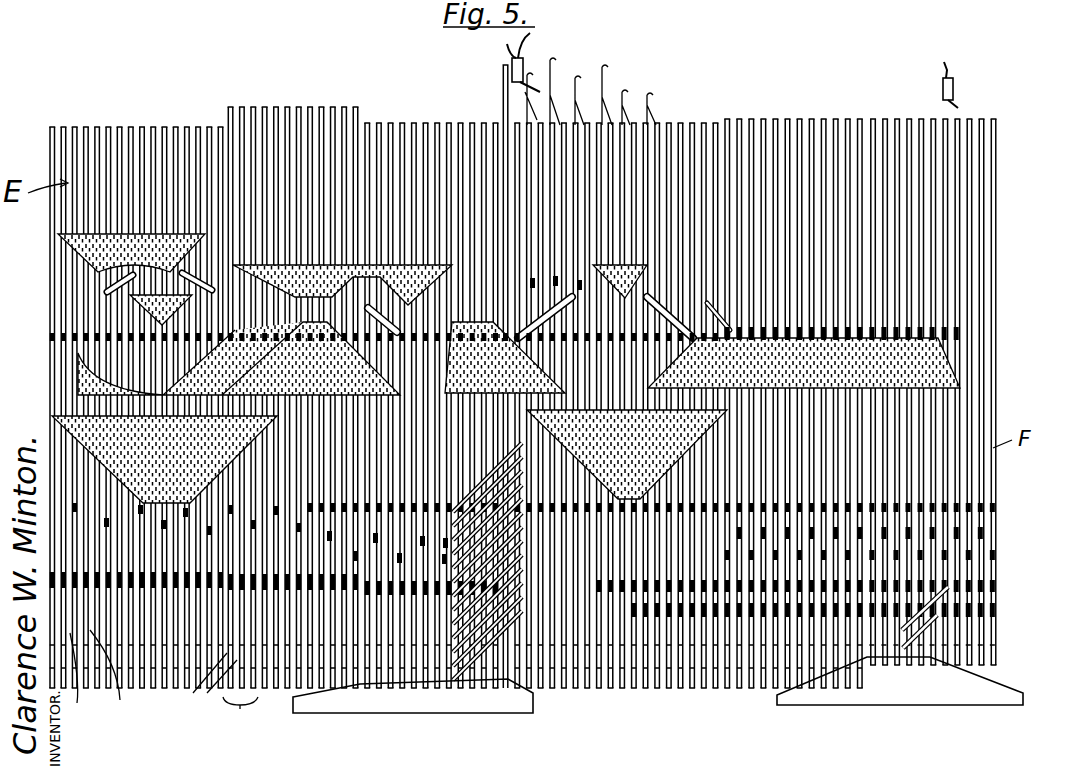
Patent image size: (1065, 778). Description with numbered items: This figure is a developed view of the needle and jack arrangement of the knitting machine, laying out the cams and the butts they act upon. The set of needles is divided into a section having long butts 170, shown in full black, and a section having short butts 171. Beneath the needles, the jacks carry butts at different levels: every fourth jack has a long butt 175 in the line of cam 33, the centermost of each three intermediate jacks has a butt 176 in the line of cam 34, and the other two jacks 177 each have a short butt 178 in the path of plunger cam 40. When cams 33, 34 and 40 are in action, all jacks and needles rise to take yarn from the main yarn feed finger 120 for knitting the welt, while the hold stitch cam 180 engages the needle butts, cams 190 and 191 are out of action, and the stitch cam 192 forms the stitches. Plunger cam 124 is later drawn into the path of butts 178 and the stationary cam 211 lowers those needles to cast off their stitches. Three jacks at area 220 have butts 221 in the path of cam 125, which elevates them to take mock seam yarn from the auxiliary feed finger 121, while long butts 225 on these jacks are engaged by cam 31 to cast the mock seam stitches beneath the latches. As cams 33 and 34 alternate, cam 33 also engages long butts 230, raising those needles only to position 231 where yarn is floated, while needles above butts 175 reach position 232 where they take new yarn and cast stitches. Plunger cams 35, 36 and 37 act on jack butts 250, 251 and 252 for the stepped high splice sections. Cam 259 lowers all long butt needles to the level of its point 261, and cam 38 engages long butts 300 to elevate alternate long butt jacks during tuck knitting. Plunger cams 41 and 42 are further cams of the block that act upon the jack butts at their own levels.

The plunger cam 31 is at (510, 483).
The plunger cam 33 is at (528, 488).
The plunger cam 34 is at (528, 497).
The plunger cam 35 is at (520, 517).
The plunger cam 36 is at (520, 535).
The plunger cam 37 is at (520, 545).
The plunger cam 38 is at (520, 563).
The plunger cam 40 is at (520, 587).
The plunger cam 41 is at (522, 600).
The plunger cam 42 is at (478, 668).
The yarn feed finger 120 is at (511, 60).
The yarn feed finger 121 is at (954, 88).
The plunger cam 124 is at (943, 587).
The plunger cam 125 is at (933, 615).
The long butts 170 is at (947, 328).
The short butts 171 is at (990, 331).
The long butt 175 is at (100, 523).
The butt 176 is at (80, 542).
The jacks 177 is at (89, 677).
The short butt 178 is at (118, 673).
The hold stitch cam 180 is at (370, 322).
The cam 190 is at (574, 300).
The cam 191 is at (505, 357).
The stitch cam 192 is at (660, 295).
The cam 211 is at (153, 303).
The area of three jacks 220 is at (241, 714).
The butts 221 is at (204, 687).
The long butts 225 is at (237, 530).
The long butts 230 is at (77, 507).
The needle position 231 is at (530, 70).
The needle position 232 is at (556, 62).
The jack butts 250 is at (290, 575).
The jack butts 251 is at (357, 585).
The jack butts 252 is at (245, 600).
The cam 259 is at (313, 282).
The cam point 261 is at (414, 297).
The long butts 300 is at (915, 587).